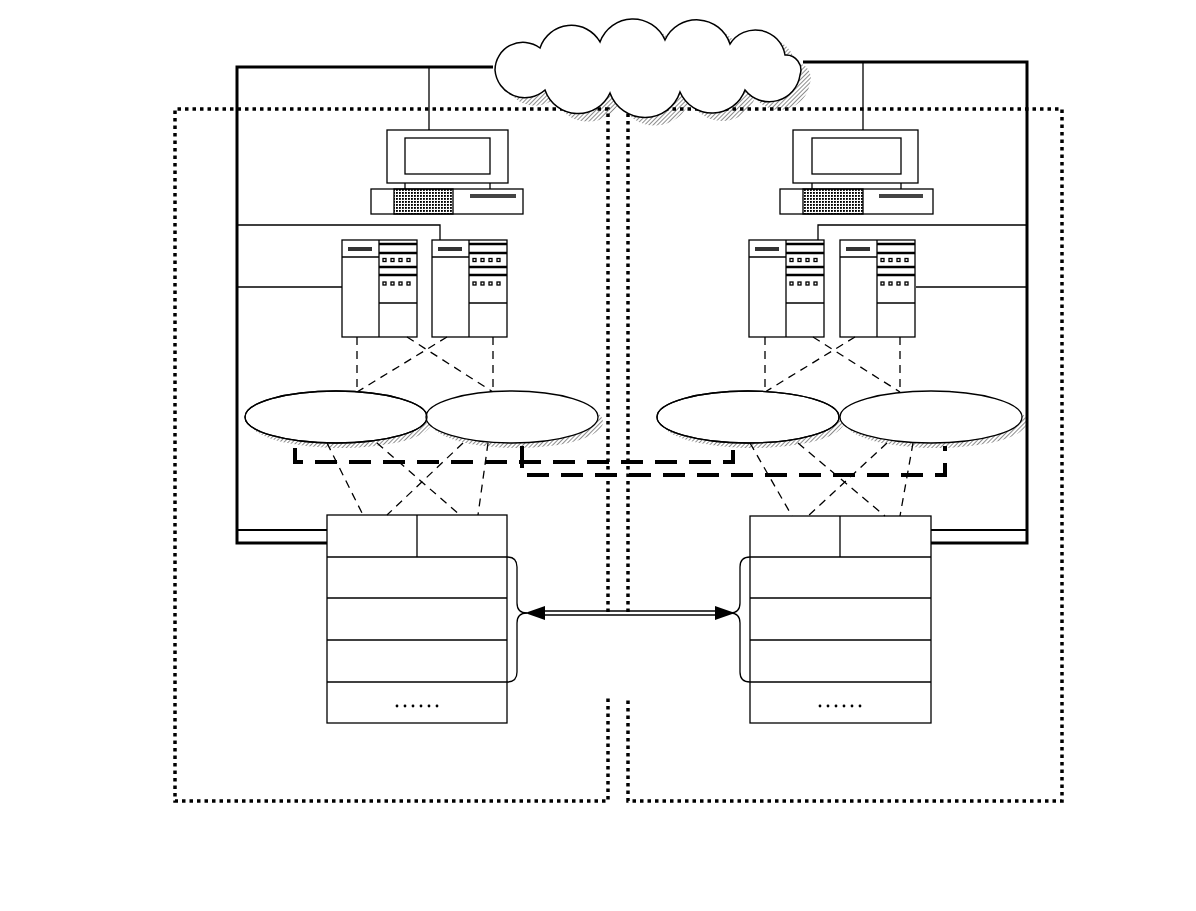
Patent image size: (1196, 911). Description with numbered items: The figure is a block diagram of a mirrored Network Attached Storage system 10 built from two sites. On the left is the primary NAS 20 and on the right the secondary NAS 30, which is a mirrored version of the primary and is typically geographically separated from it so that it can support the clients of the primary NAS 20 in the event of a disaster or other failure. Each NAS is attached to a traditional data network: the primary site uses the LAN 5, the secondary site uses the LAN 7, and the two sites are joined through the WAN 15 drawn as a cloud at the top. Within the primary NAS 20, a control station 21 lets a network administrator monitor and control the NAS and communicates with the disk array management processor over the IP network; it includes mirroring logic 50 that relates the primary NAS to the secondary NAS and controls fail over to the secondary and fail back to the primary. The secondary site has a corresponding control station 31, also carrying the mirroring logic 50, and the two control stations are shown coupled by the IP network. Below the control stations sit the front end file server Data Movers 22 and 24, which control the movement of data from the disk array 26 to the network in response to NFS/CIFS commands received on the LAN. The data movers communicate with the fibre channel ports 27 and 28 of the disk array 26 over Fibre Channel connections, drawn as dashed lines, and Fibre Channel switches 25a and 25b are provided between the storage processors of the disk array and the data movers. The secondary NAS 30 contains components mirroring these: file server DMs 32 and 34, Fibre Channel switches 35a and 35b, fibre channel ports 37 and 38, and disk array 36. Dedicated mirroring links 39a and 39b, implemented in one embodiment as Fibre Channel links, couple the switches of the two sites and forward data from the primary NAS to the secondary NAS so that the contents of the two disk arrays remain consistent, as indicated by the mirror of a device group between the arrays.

The mirrored NAS system 10 is at (152, 55).
The primary NAS 20 is at (224, 108).
The secondary NAS 30 is at (1062, 378).
The LAN 5 is at (237, 202).
The LAN 7 is at (1020, 193).
The WAN 15 is at (645, 37).
The control station 21 is at (387, 171).
The control station 31 is at (897, 154).
The mirroring logic 50 is at (628, 202).
The Data Mover device 22 is at (342, 258).
The Data Mover device 24 is at (507, 240).
The file server DM 32 is at (812, 244).
The file server DM 34 is at (917, 266).
The Fibre Channel switch 25a is at (342, 392).
The Fibre Channel switch 25b is at (508, 392).
The Fibre Channel switch 35a is at (750, 392).
The Fibre Channel switch 35b is at (913, 392).
The mirroring link 39a is at (312, 464).
The mirroring link 39b is at (945, 477).
The disk array 26 is at (405, 645).
The disk array 36 is at (861, 646).
The fibre channel port 27 is at (358, 515).
The fibre channel port 28 is at (508, 538).
The fibre channel port 37 is at (770, 516).
The fibre channel port 38 is at (931, 530).